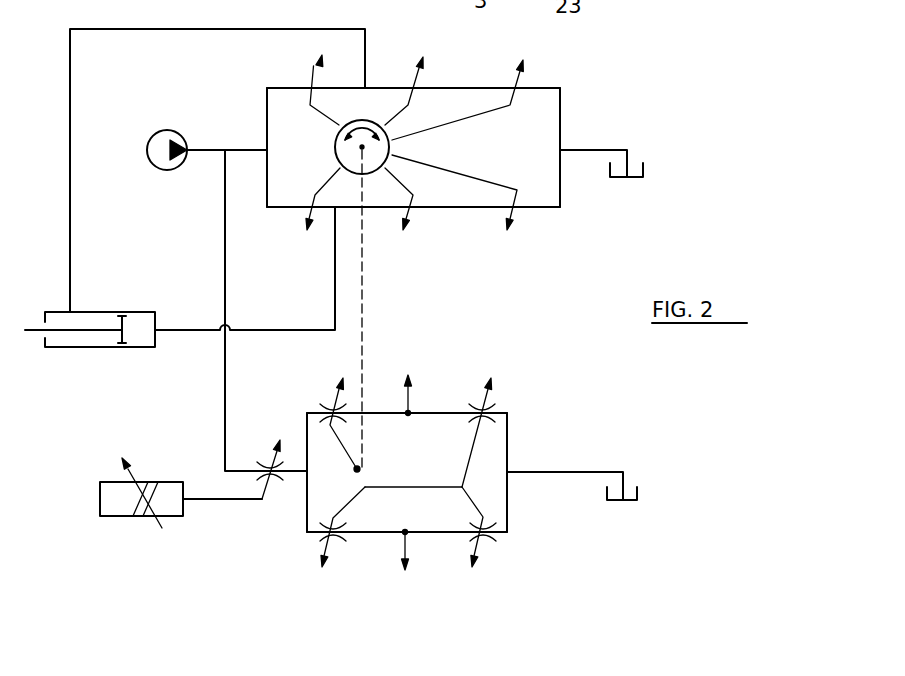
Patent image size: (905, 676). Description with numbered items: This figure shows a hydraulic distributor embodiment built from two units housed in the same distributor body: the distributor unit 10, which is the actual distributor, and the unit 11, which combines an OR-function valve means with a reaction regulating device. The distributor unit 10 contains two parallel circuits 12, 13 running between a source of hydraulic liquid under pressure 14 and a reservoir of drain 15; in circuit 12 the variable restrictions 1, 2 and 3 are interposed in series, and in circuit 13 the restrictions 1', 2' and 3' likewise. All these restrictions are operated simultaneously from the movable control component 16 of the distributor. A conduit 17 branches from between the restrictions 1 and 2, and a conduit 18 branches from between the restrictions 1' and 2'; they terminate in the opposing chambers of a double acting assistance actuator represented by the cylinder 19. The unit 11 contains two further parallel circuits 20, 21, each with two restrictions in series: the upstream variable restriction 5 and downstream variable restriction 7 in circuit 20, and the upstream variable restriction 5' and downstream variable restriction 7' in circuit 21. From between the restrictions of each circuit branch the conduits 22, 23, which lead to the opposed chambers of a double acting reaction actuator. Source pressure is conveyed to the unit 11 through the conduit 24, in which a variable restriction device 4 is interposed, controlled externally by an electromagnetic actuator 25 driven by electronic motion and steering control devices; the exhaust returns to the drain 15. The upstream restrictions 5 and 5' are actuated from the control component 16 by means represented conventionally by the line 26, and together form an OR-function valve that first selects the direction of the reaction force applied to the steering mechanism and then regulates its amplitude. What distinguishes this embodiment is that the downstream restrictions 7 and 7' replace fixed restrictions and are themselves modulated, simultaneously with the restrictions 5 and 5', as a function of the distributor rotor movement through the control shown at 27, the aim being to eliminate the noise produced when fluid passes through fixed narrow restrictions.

The variable restriction 1 is at (324, 78).
The variable restriction 2 is at (407, 78).
The variable restriction 3 is at (469, 90).
The variable restriction 1' is at (319, 217).
The variable restriction 2' is at (400, 217).
The variable restriction 3' is at (455, 211).
The variable restriction device 4 is at (265, 469).
The upstream variable restriction 5 is at (338, 412).
The upstream variable restriction 5' is at (338, 542).
The downstream variable restriction 7 is at (486, 431).
The downstream variable restriction 7' is at (483, 533).
The distributor unit 10 is at (570, 101).
The unit 11 is at (518, 420).
The parallel circuit 12 is at (455, 88).
The parallel circuit 13 is at (450, 210).
The source of hydraulic liquid under pressure 14 is at (150, 150).
The reservoir of drain 15 is at (583, 314).
The movable control component 16 is at (335, 156).
The conduit 17 is at (217, 157).
The conduit 18 is at (245, 268).
The cylinder 19 is at (90, 316).
The parallel circuit 20 is at (446, 412).
The parallel circuit 21 is at (427, 538).
The conduit 22 is at (413, 381).
The conduit 23 is at (403, 566).
The conduit 24 is at (228, 368).
The electromagnetic actuator 25 is at (181, 490).
The line 26 is at (362, 342).
The control 27 is at (404, 480).